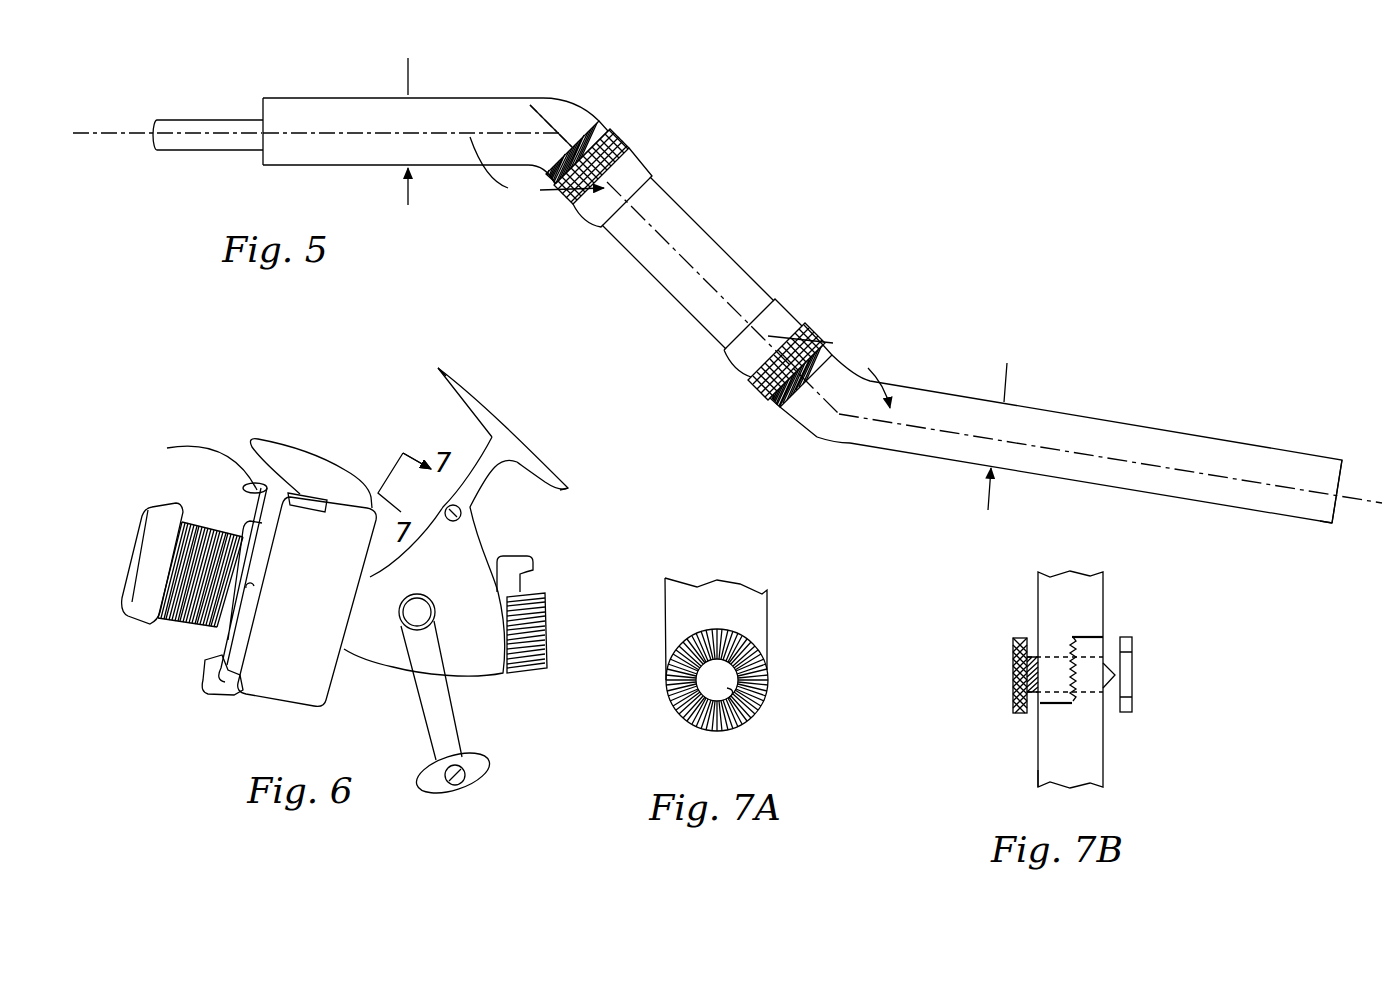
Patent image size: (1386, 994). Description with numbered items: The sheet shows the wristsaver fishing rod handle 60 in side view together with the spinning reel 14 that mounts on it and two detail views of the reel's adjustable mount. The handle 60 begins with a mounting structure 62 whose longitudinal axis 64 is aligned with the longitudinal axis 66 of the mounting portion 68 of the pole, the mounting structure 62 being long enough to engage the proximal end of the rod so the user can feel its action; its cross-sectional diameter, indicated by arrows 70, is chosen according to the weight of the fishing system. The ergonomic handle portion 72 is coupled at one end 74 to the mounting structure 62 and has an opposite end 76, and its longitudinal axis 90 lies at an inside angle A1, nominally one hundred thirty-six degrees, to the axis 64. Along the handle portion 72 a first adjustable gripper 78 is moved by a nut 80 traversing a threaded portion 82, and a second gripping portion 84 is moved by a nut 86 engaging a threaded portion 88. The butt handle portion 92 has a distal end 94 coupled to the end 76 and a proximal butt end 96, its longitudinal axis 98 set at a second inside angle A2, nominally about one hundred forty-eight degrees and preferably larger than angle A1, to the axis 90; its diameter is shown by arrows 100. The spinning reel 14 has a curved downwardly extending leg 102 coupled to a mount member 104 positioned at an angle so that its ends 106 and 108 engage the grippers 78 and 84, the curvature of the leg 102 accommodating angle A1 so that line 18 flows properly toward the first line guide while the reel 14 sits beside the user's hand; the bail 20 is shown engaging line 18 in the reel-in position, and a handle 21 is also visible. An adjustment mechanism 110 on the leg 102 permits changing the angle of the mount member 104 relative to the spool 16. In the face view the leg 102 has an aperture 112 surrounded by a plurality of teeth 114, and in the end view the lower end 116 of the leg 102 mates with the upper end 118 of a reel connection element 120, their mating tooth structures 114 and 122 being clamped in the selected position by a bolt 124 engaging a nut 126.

In FIG. 6, the spinning reel 14 is at (250, 722).
In FIG. 6, the spool 16 is at (153, 508).
In FIG. 6, the line 18 is at (207, 447).
In FIG. 6, the bail 20 is at (242, 620).
In FIG. 6, the handle 21 is at (455, 704).
In FIG. 5, the wristsaver fishing rod handle 60 is at (862, 200).
In FIG. 5, the mounting structure 62 is at (452, 97).
In FIG. 5, the longitudinal axis 64 is at (365, 134).
In FIG. 5, the longitudinal axis 66 is at (128, 137).
In FIG. 5, the mounting portion of pole 68 is at (205, 118).
In FIG. 5, the arrows 70 is at (408, 194).
In FIG. 5, the ergonomic handle portion 72 is at (735, 262).
In FIG. 5, the end 74 is at (567, 100).
In FIG. 5, the opposite end 76 is at (810, 436).
In FIG. 5, the first adjustable gripper 78 is at (597, 220).
In FIG. 5, the nut 80 is at (617, 150).
In FIG. 5, the threaded portion 82 is at (577, 157).
In FIG. 5, the second gripping portion 84 is at (732, 360).
In FIG. 5, the nut 86 is at (755, 385).
In FIG. 5, the threaded portion 88 is at (783, 401).
In FIG. 5, the longitudinal axis 90 is at (668, 240).
In FIG. 5, the butt handle portion 92 is at (1280, 448).
In FIG. 5, the distal end 94 is at (828, 440).
In FIG. 5, the butt end 96 is at (1333, 526).
In FIG. 5, the longitudinal axis 98 is at (1123, 457).
In FIG. 5, the arrows 100 is at (988, 495).
In FIG. 6, the downwardly extending leg 102 is at (488, 482).
In FIG. 7A, the downwardly extending leg 102 is at (768, 617).
In FIG. 7B, the downwardly extending leg 102 is at (1047, 580).
In FIG. 6, the mount member 104 is at (498, 418).
In FIG. 6, the end 106 is at (439, 366).
In FIG. 6, the end 108 is at (570, 489).
In FIG. 6, the adjustment mechanism 110 is at (461, 517).
In FIG. 7A, the aperture 112 is at (729, 702).
In FIG. 7A, the teeth 114 is at (757, 667).
In FIG. 7B, the teeth 114 is at (1080, 637).
In FIG. 7B, the lower end 116 is at (1047, 704).
In FIG. 7B, the upper end 118 is at (1097, 643).
In FIG. 7B, the reel connection element 120 is at (1050, 777).
In FIG. 7B, the tooth structure 122 is at (1070, 707).
In FIG. 7B, the bolt 124 is at (1015, 645).
In FIG. 7B, the nut 126 is at (1128, 683).
In FIG. 5, the inside angle A1 is at (537, 168).
In FIG. 5, the inside angle A2 is at (829, 372).